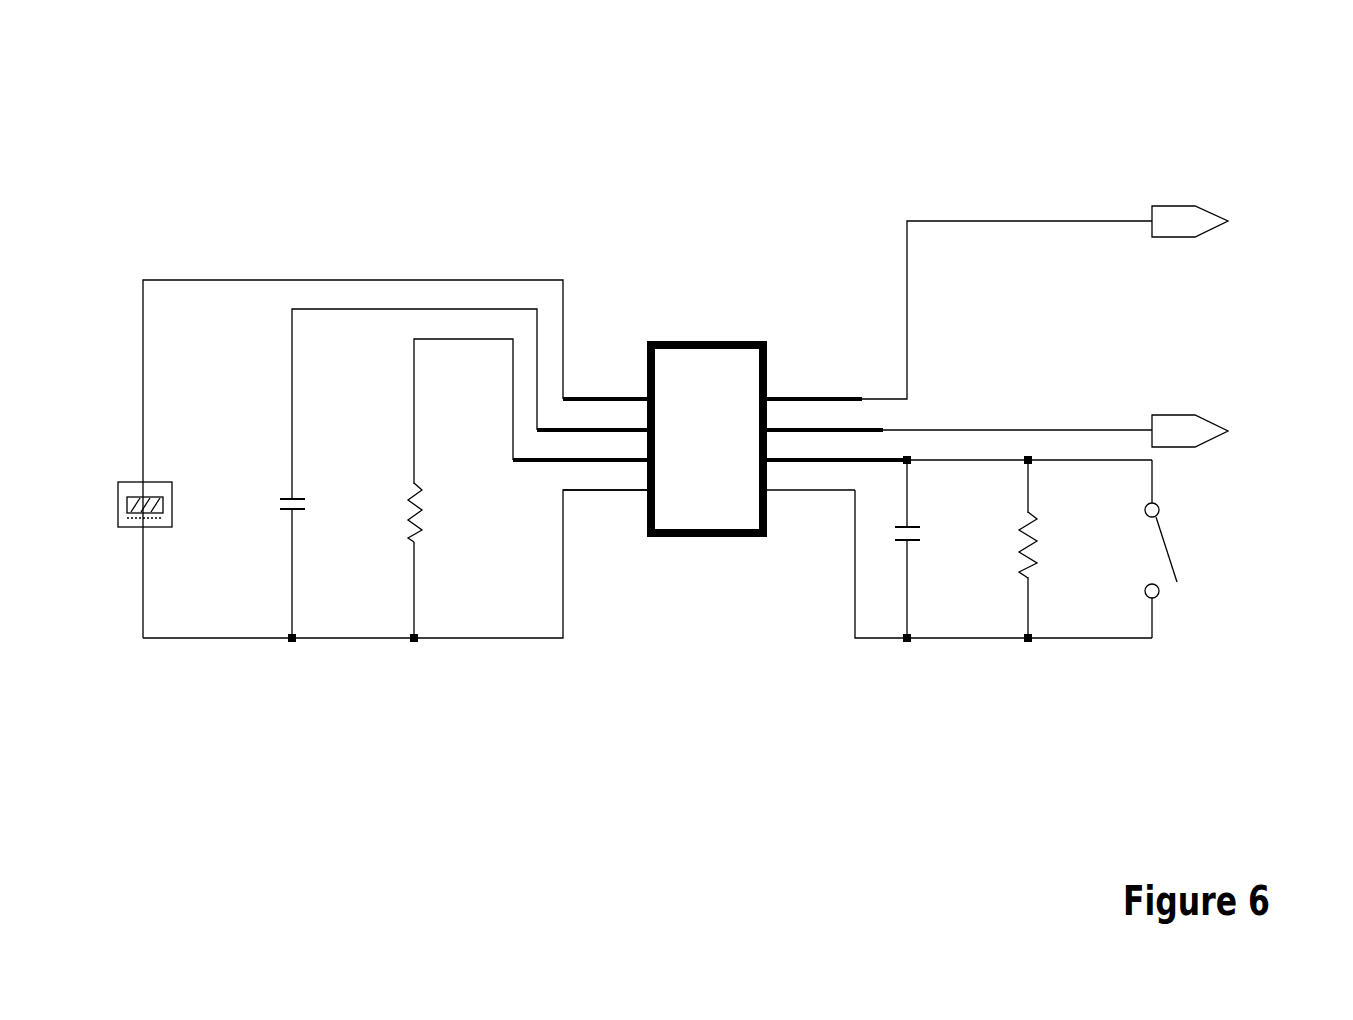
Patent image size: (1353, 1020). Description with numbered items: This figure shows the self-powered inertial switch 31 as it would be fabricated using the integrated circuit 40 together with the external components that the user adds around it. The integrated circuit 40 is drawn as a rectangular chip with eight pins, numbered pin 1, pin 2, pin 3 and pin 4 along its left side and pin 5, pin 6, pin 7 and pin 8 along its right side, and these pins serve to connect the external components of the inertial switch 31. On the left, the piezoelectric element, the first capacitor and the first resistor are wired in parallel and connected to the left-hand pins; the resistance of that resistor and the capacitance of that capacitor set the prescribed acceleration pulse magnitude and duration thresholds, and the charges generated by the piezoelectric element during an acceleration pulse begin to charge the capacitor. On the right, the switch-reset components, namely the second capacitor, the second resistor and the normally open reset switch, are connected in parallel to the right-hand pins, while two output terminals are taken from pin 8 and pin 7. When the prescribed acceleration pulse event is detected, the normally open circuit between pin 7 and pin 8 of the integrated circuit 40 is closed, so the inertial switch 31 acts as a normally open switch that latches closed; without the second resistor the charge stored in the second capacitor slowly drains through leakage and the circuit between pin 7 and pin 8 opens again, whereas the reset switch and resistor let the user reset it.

The inertial switch 31 is at (1142, 87).
The integrated circuit 40 is at (727, 340).
The pin 1 is at (620, 399).
The pin 2 is at (607, 430).
The pin 3 is at (595, 460).
The pin 4 is at (620, 492).
The pin 5 is at (795, 492).
The pin 6 is at (821, 460).
The pin 7 is at (809, 430).
The pin 8 is at (799, 399).